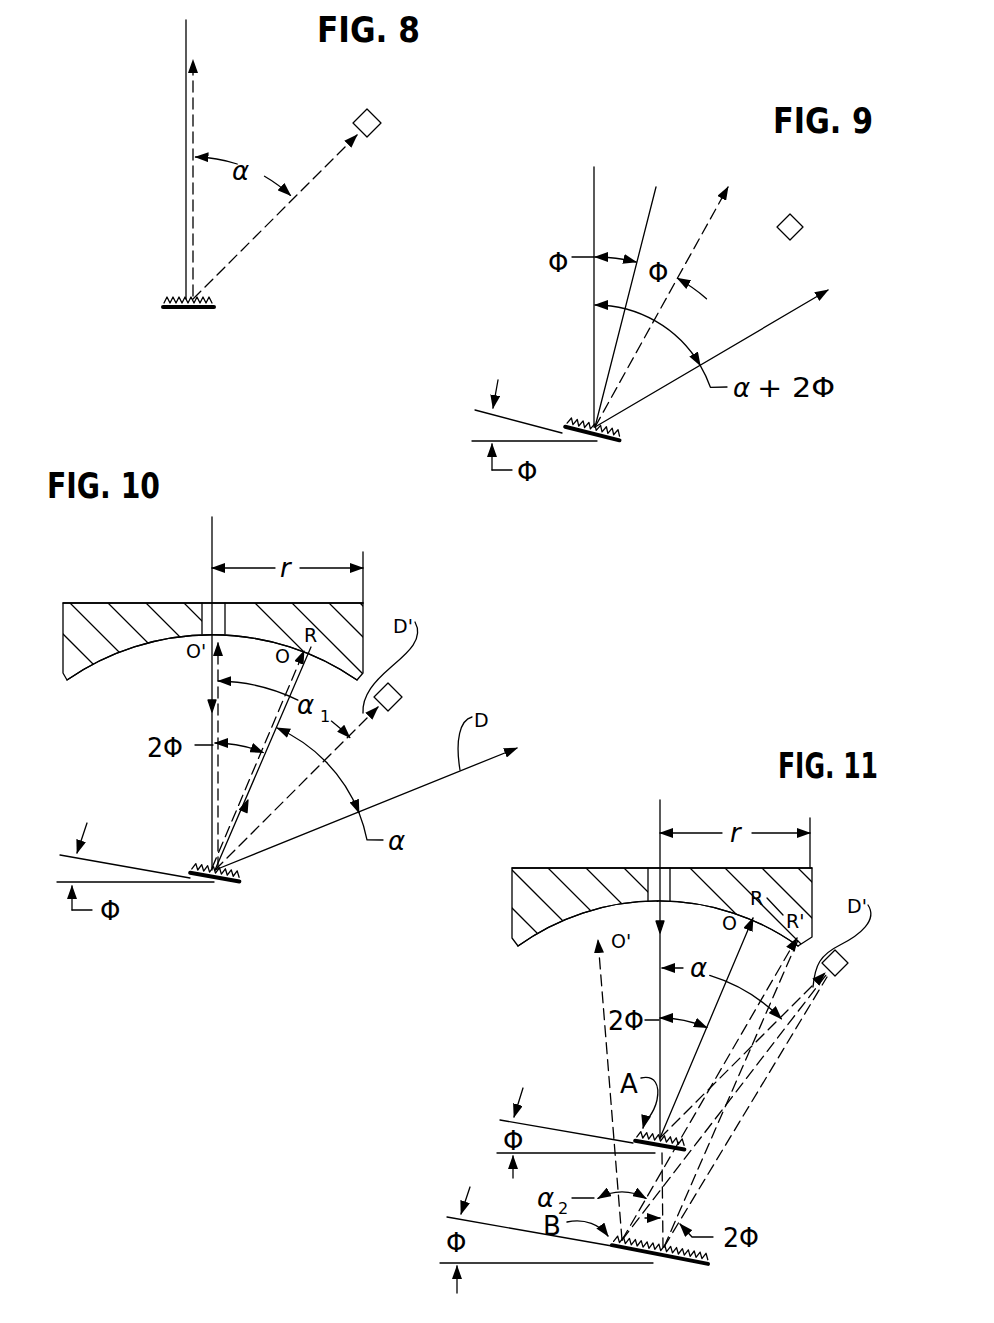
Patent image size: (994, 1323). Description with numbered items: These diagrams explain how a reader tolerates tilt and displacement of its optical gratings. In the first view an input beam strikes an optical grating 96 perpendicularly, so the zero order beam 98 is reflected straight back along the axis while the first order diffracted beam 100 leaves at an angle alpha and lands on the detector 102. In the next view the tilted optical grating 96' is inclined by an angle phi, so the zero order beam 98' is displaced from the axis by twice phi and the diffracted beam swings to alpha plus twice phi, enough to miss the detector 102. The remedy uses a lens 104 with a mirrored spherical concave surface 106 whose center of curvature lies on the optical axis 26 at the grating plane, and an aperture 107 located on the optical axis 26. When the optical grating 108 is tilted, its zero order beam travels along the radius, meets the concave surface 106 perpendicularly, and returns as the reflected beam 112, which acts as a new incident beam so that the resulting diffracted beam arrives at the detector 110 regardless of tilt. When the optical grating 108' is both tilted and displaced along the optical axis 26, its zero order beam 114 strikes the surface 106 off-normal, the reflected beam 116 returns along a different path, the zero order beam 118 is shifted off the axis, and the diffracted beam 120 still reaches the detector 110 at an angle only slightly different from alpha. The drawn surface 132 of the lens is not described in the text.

In FIG. 8, the optical grating 96 is at (230, 286).
In FIG. 8, the zero order beam 98 is at (229, 159).
In FIG. 8, the first order diffracted beam 100 is at (325, 165).
In FIG. 9, the first order diffracted beam 100 is at (793, 312).
In FIG. 8, the detector 102 is at (374, 118).
In FIG. 9, the detector 102 is at (794, 215).
In FIG. 9, the tilted optical grating 96' is at (624, 454).
In FIG. 9, the zero order beam 98' is at (663, 277).
In FIG. 10, the optical axis 26 is at (212, 528).
In FIG. 11, the optical axis 26 is at (660, 812).
In FIG. 10, the lens 104 is at (82, 618).
In FIG. 11, the lens 104 is at (522, 905).
In FIG. 10, the concave surface 106 is at (120, 653).
In FIG. 11, the concave surface 106 is at (550, 928).
In FIG. 10, the aperture 107 is at (207, 618).
In FIG. 11, the aperture 107 is at (650, 897).
In FIG. 10, the optical grating 108 is at (186, 843).
In FIG. 11, the optical grating 108 is at (711, 1131).
In FIG. 11, the optical grating 108' is at (703, 1267).
In FIG. 10, the detector 110 is at (465, 653).
In FIG. 11, the detector 110 is at (847, 962).
In FIG. 10, the reflected beam 112 is at (256, 776).
In FIG. 11, the zero order beam 114 is at (695, 1184).
In FIG. 11, the reflected beam 116 is at (750, 1020).
In FIG. 11, the zero order beam 118 is at (601, 1008).
In FIG. 11, the diffracted beam 120 is at (823, 997).
In FIG. 10, the planar surface of lens 132 is at (117, 603).
In FIG. 11, the planar surface of lens 132 is at (567, 868).